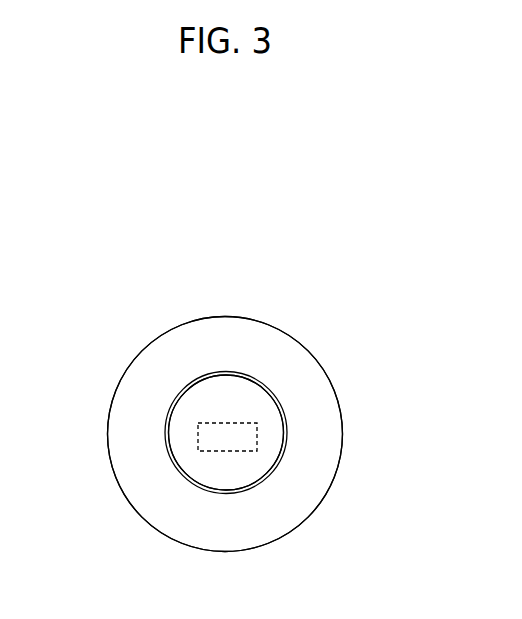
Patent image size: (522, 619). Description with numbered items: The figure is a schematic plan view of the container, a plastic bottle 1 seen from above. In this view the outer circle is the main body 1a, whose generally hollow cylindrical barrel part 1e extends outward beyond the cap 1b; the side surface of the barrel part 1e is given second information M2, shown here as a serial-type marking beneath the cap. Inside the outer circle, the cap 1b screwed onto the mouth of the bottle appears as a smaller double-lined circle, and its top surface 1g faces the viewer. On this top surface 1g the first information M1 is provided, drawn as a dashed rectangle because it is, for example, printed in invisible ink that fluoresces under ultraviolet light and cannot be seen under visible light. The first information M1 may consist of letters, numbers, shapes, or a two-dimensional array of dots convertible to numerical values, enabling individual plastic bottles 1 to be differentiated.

The plastic bottle 1 is at (66, 249).
The main body 1a is at (335, 496).
The cap 1b is at (216, 372).
The barrel part 1e is at (137, 428).
The top surface 1g is at (238, 408).
The first information M1 is at (257, 443).
The second information M2 is at (193, 508).